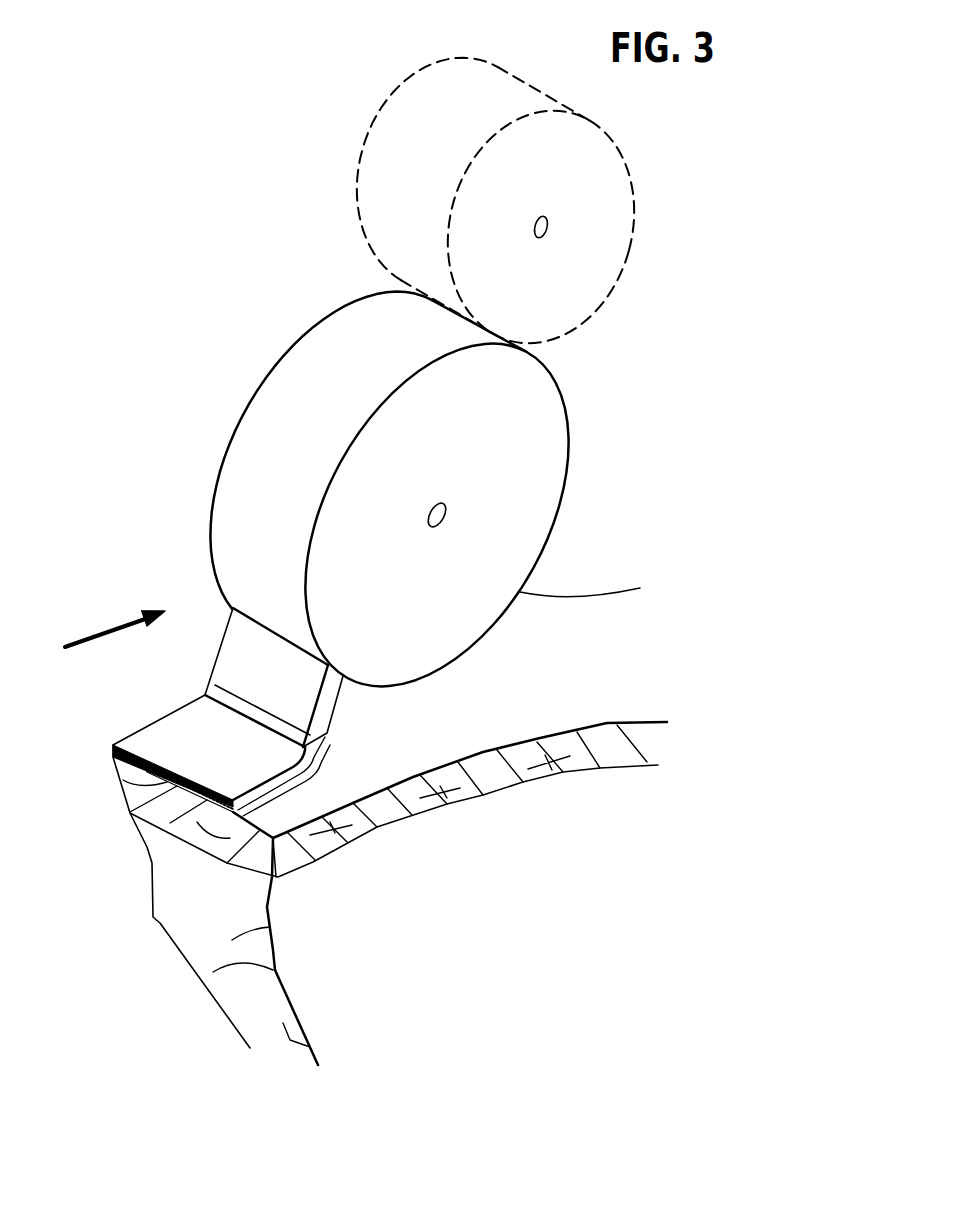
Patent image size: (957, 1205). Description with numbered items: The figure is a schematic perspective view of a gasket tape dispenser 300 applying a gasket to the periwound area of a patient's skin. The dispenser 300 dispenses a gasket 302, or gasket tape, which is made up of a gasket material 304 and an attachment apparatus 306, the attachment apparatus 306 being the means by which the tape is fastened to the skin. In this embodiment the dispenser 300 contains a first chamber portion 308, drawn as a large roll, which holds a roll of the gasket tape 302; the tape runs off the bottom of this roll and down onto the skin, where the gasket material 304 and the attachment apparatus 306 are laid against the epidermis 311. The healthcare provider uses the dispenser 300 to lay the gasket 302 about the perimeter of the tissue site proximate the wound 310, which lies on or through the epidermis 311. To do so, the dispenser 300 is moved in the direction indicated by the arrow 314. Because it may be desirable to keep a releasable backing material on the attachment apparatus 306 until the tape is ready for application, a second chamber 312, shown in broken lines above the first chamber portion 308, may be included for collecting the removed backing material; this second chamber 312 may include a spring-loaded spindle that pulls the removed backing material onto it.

The gasket tape dispenser 300 is at (340, 702).
The gasket 302 is at (137, 748).
The gasket material 304 is at (185, 737).
The attachment apparatus 306 is at (150, 768).
The first chamber portion 308 is at (224, 453).
The wound 310 is at (397, 909).
The epidermis 311 is at (177, 833).
The second chamber 312 is at (363, 188).
The arrow 314 is at (93, 630).